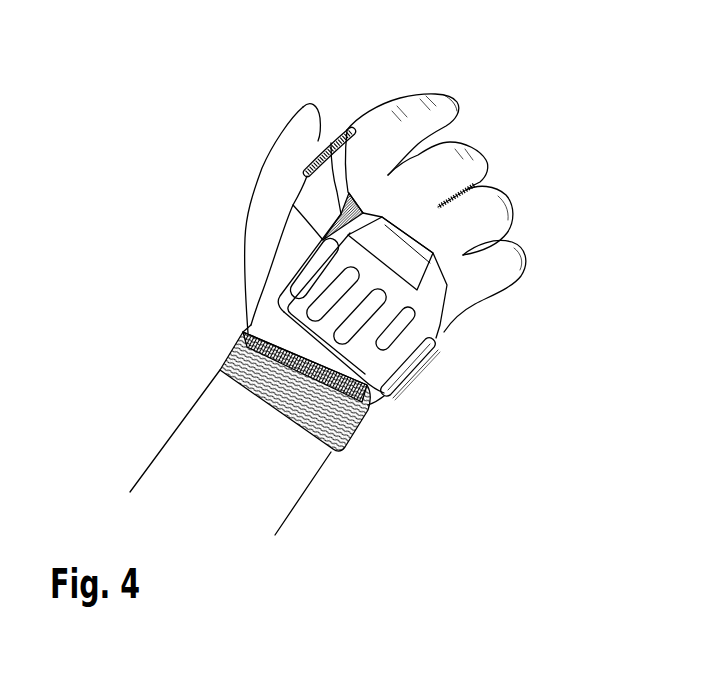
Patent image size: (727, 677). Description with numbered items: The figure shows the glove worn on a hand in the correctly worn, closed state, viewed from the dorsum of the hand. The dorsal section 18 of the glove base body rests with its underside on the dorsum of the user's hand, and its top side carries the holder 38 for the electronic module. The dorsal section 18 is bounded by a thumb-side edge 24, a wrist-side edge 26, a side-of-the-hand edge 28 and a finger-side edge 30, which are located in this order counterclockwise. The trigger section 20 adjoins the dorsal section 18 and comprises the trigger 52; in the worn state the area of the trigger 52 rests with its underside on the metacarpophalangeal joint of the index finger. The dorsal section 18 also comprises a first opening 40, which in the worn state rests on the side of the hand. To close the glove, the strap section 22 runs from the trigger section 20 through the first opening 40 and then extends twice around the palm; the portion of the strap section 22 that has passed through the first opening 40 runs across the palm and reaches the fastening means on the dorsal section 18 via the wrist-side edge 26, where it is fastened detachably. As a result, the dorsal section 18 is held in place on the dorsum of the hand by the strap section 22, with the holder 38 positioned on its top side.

The dorsal section 18 is at (272, 273).
The trigger section 20 is at (347, 130).
The strap section 22 is at (246, 334).
The thumb-side edge 24 is at (277, 232).
The wrist-side edge 26 is at (292, 432).
The side-of-the-hand edge 28 is at (419, 389).
The finger-side edge 30 is at (386, 209).
The holder 38 is at (432, 266).
The first opening 40 is at (436, 354).
The trigger 52 is at (332, 128).